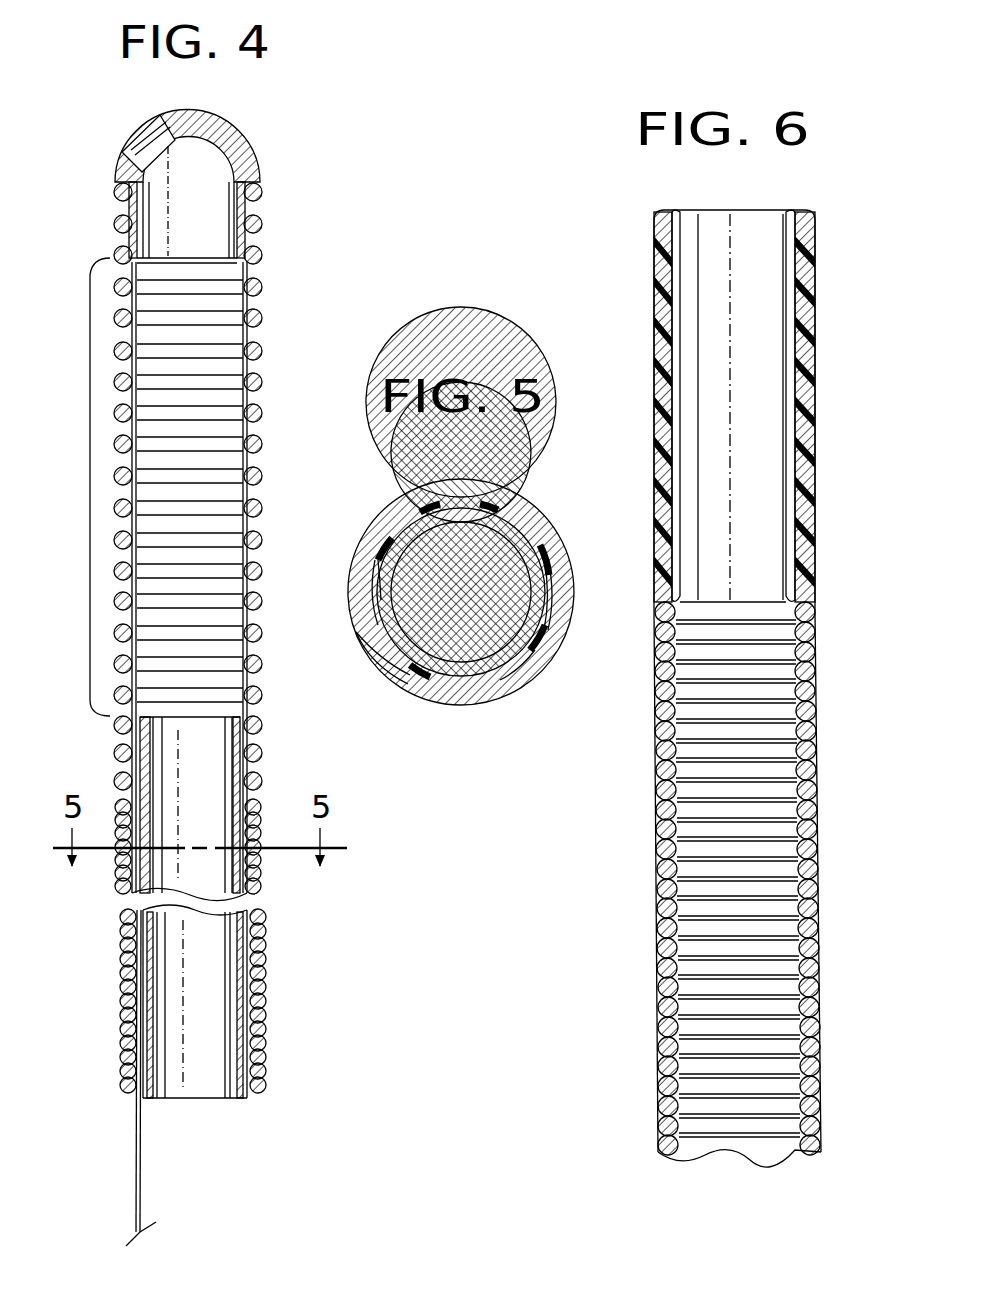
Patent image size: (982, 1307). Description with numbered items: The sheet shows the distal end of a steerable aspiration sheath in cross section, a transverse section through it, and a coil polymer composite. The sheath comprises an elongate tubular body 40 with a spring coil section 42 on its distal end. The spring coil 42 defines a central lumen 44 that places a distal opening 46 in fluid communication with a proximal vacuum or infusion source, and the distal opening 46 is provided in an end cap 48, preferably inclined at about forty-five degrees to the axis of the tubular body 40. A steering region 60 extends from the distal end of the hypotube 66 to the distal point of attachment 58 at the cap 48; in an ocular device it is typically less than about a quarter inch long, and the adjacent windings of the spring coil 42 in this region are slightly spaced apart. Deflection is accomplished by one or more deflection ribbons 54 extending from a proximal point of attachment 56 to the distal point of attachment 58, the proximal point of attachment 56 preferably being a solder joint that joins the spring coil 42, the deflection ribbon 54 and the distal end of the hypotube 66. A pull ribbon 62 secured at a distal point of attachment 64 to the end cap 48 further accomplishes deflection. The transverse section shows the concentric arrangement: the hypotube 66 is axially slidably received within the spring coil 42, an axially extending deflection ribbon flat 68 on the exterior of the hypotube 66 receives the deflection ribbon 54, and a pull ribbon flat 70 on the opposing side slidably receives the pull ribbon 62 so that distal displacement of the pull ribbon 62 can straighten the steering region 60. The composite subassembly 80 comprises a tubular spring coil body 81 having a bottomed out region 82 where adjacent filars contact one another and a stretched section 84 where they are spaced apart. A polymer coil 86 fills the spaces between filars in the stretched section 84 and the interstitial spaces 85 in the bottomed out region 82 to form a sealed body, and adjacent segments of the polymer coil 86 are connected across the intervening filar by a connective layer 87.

In FIG. 4, the elongate tubular body 40 is at (266, 698).
In FIG. 4, the spring coil section 42 is at (258, 286).
In FIG. 5, the spring coil section 42 is at (552, 535).
In FIG. 4, the central lumen 44 is at (232, 418).
In FIG. 5, the central lumen 44 is at (479, 609).
In FIG. 4, the distal opening 46 is at (150, 148).
In FIG. 4, the end cap 48 is at (232, 150).
In FIG. 4, the deflection ribbon 54 is at (256, 524).
In FIG. 5, the deflection ribbon 54 is at (550, 594).
In FIG. 4, the proximal point of attachment 56 is at (240, 820).
In FIG. 5, the proximal point of attachment 56 is at (560, 630).
In FIG. 4, the distal point of attachment 58 is at (260, 208).
In FIG. 4, the steering region 60 is at (65, 487).
In FIG. 4, the pull ribbon 62 is at (138, 274).
In FIG. 5, the pull ribbon 62 is at (372, 596).
In FIG. 4, the distal point of attachment 64 is at (128, 206).
In FIG. 4, the hypotube 66 is at (266, 976).
In FIG. 5, the hypotube 66 is at (505, 528).
In FIG. 5, the deflection ribbon flat 68 is at (556, 660).
In FIG. 5, the pull ribbon flat 70 is at (378, 560).
In FIG. 6, the coil polymer composite subassembly 80 is at (652, 963).
In FIG. 6, the tubular spring coil body 81 is at (818, 607).
In FIG. 6, the bottomed out region 82 is at (654, 851).
In FIG. 6, the stretched section 84 is at (651, 262).
In FIG. 6, the interstitial spaces 85 is at (659, 1046).
In FIG. 6, the polymer coil 86 is at (782, 440).
In FIG. 6, the connective layer 87 is at (806, 320).